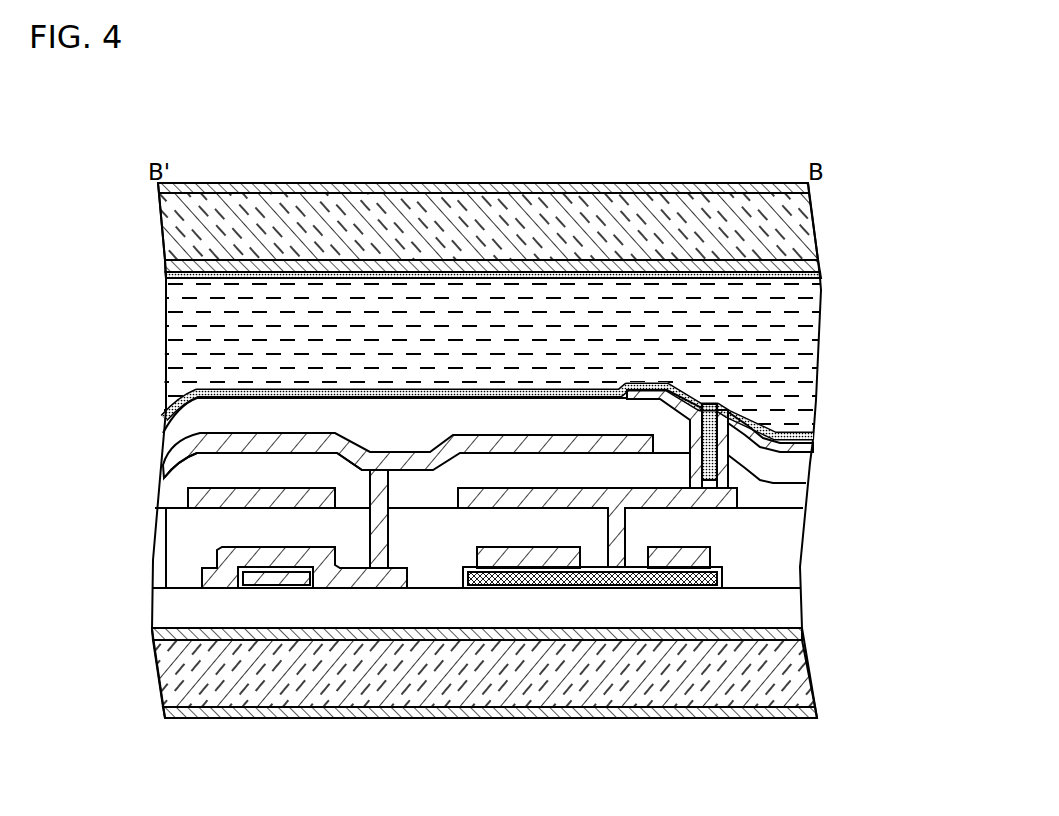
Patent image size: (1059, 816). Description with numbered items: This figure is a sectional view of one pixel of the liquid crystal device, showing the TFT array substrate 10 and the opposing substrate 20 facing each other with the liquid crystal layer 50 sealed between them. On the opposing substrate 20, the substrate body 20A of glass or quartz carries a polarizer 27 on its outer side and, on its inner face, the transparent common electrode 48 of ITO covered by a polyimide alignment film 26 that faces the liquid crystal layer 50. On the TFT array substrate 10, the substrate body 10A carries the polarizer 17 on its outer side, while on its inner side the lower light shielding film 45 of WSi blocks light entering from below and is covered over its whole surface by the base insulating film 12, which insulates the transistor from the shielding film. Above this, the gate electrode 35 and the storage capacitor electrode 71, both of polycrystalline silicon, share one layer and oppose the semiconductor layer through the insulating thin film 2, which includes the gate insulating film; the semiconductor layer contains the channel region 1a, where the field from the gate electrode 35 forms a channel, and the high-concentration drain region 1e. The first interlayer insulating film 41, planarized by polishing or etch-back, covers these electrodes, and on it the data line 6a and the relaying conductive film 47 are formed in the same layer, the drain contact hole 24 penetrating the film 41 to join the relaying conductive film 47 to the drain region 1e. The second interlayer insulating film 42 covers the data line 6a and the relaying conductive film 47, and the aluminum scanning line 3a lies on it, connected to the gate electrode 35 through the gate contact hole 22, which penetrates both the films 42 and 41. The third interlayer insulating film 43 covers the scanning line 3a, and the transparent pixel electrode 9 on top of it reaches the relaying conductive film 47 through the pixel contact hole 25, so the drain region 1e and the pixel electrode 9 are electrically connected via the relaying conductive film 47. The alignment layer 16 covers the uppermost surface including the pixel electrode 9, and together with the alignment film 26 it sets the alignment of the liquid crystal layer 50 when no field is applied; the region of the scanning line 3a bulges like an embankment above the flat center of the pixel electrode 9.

The opposing substrate 20 is at (127, 208).
The substrate body 20A is at (212, 216).
The polarizer 27 is at (640, 183).
The common electrode 48 is at (168, 268).
The alignment film 26 is at (168, 277).
The liquid crystal layer 50 is at (170, 312).
The alignment layer 16 is at (187, 385).
The third interlayer insulating film 43 is at (172, 437).
The second interlayer insulating film 42 is at (183, 484).
The data line 6a is at (188, 497).
The first interlayer insulating film 41 is at (167, 520).
The TFT array substrate 10 is at (130, 541).
The gate electrode 35 is at (200, 570).
The base insulating film 12 is at (168, 612).
The lower light shielding film 45 is at (155, 632).
The substrate body 10A is at (175, 675).
The channel region 1a is at (253, 590).
The insulating thin film 2 is at (297, 590).
The gate contact hole 22 is at (378, 583).
The scanning line 3a is at (401, 453).
The relaying conductive film 47 is at (511, 490).
The storage capacitor electrode 71 is at (483, 553).
The pixel contact hole 25 is at (728, 485).
The pixel electrode 9 is at (795, 450).
The high-concentration drain region 1e is at (543, 590).
The drain contact hole 24 is at (620, 590).
The polarizer 17 is at (762, 715).